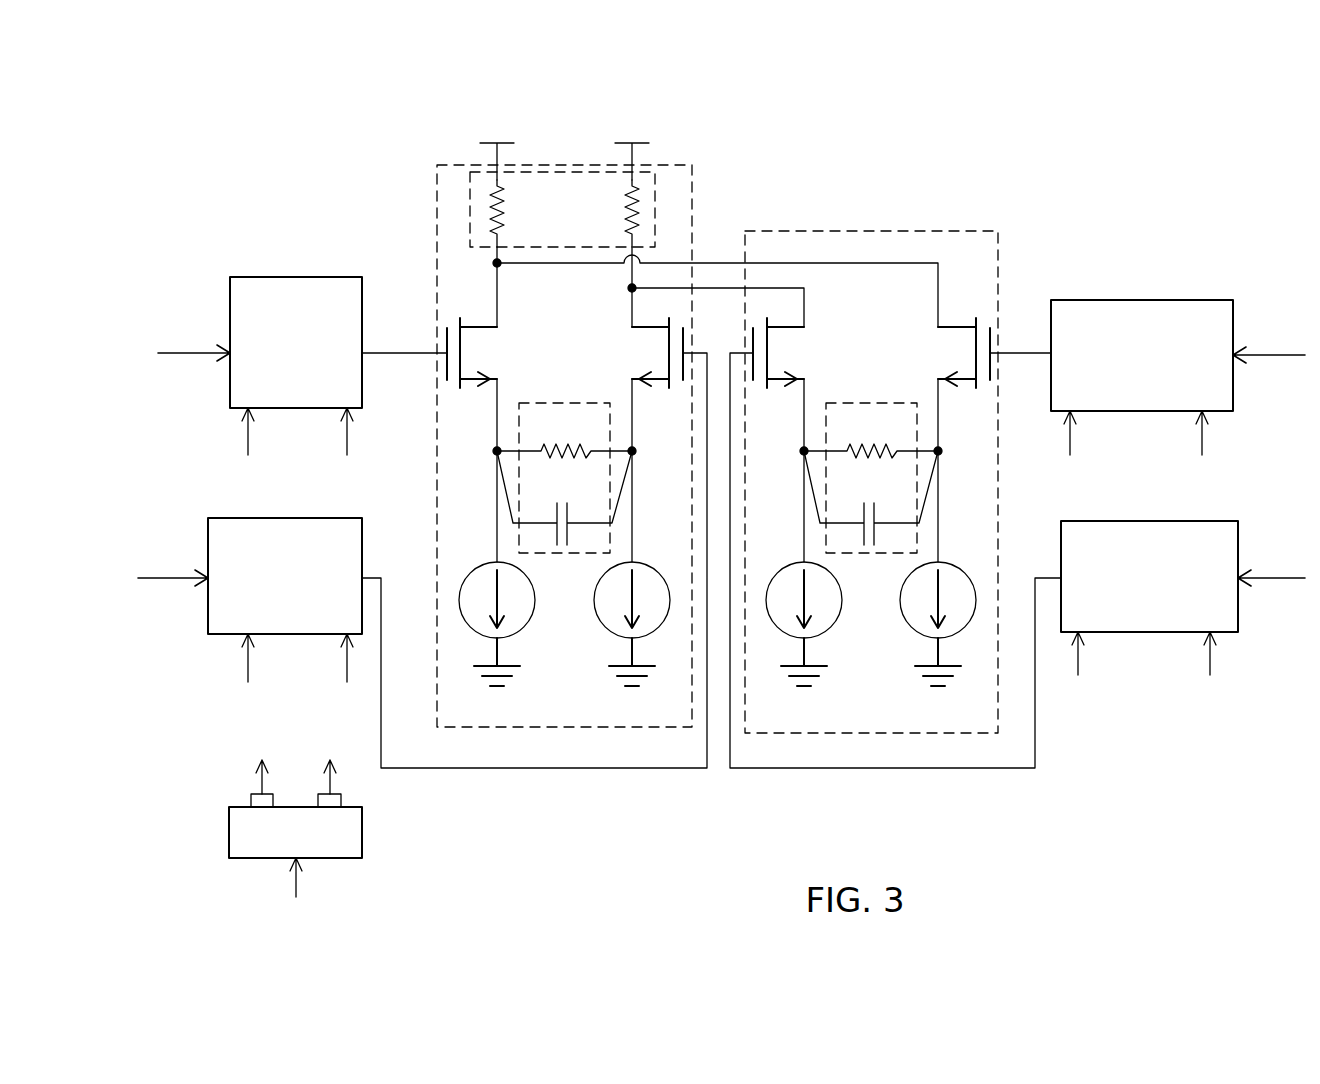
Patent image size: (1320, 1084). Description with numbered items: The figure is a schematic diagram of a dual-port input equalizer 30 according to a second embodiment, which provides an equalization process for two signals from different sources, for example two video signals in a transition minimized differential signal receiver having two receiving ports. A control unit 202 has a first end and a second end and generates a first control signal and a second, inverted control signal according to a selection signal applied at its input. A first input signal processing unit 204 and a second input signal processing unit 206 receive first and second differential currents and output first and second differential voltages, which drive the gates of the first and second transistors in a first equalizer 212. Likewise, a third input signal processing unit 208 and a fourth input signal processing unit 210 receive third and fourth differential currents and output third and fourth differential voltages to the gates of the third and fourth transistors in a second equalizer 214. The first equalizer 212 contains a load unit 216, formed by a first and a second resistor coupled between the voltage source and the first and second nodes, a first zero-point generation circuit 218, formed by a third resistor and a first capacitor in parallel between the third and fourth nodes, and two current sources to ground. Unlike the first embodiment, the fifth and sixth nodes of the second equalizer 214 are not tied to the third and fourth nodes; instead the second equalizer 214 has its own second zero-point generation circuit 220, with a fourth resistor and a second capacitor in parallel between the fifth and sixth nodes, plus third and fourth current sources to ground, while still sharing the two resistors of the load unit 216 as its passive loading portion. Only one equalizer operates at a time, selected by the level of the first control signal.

The dual-port input equalizer 30 is at (1138, 198).
The control unit 202 is at (229, 820).
The first input signal processing unit 204 is at (294, 277).
The second input signal processing unit 206 is at (296, 518).
The third input signal processing unit 208 is at (1116, 300).
The fourth input signal processing unit 210 is at (1120, 521).
The first equalizer 212 is at (577, 165).
The second equalizer 214 is at (929, 231).
The load unit 216 is at (470, 197).
The first zero-point generation circuit 218 is at (563, 403).
The second zero-point generation circuit 220 is at (870, 403).